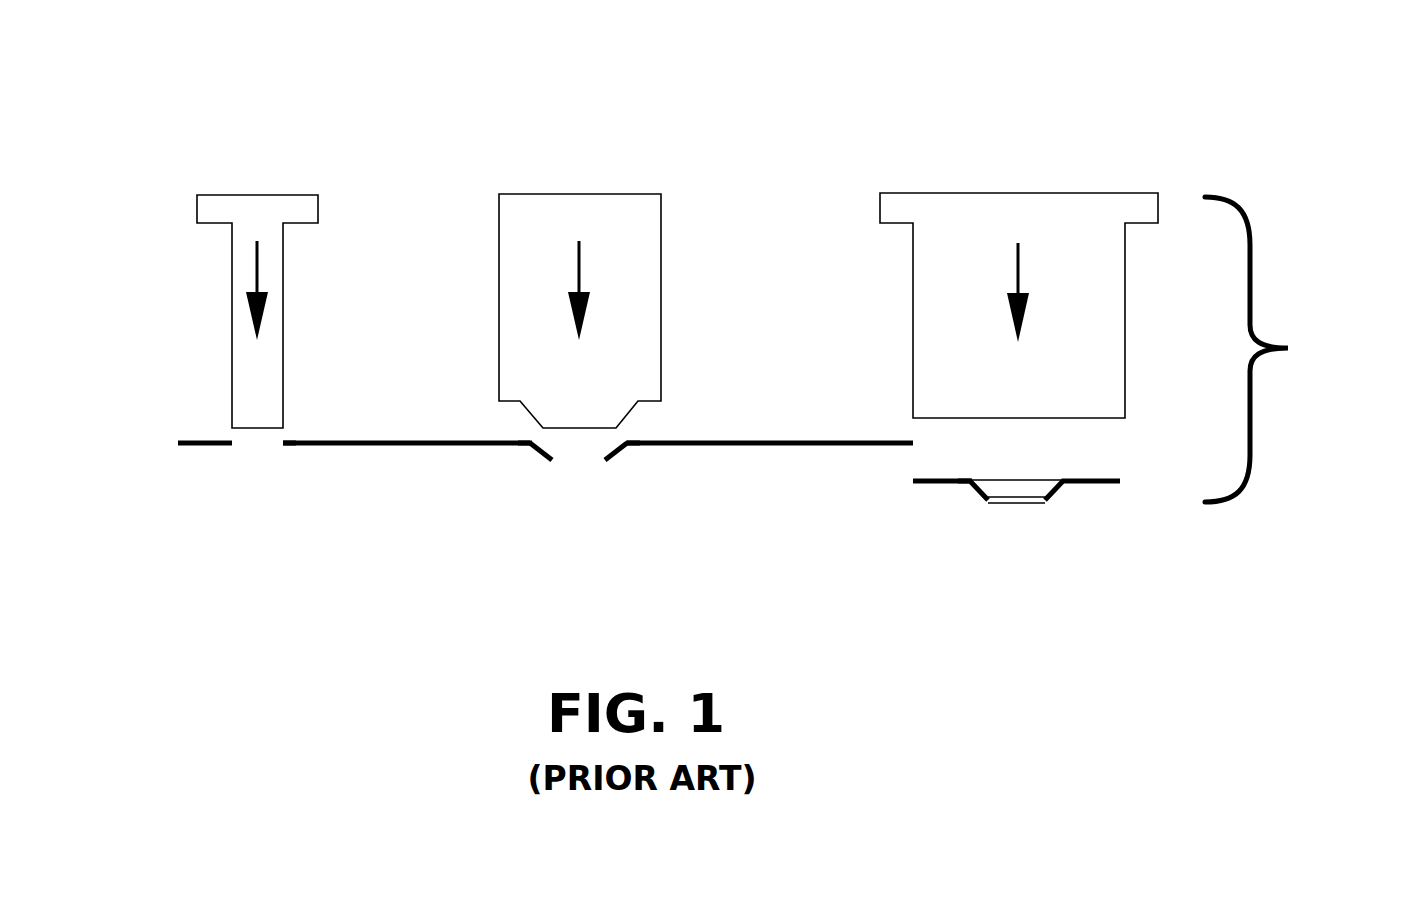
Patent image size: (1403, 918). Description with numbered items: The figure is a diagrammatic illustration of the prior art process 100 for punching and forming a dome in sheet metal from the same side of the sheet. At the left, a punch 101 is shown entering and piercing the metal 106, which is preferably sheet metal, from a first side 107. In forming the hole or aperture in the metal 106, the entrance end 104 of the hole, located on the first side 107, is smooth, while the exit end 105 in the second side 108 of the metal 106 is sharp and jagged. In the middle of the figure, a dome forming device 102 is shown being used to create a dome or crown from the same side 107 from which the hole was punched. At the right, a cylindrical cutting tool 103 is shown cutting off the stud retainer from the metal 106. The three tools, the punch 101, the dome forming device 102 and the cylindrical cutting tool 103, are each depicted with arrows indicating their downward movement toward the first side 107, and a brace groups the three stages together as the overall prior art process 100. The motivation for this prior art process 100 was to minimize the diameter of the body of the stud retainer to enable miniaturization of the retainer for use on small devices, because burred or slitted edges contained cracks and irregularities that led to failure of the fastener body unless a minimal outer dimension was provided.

The prior art process 100 is at (1294, 349).
The punch 101 is at (257, 269).
The dome forming device 102 is at (577, 268).
The cylindrical cutting tool 103 is at (1018, 268).
The entrance end 104 is at (284, 440).
The exit end 105 is at (551, 461).
The metal 106 is at (747, 438).
The first side 107 is at (412, 440).
The second side 108 is at (372, 447).